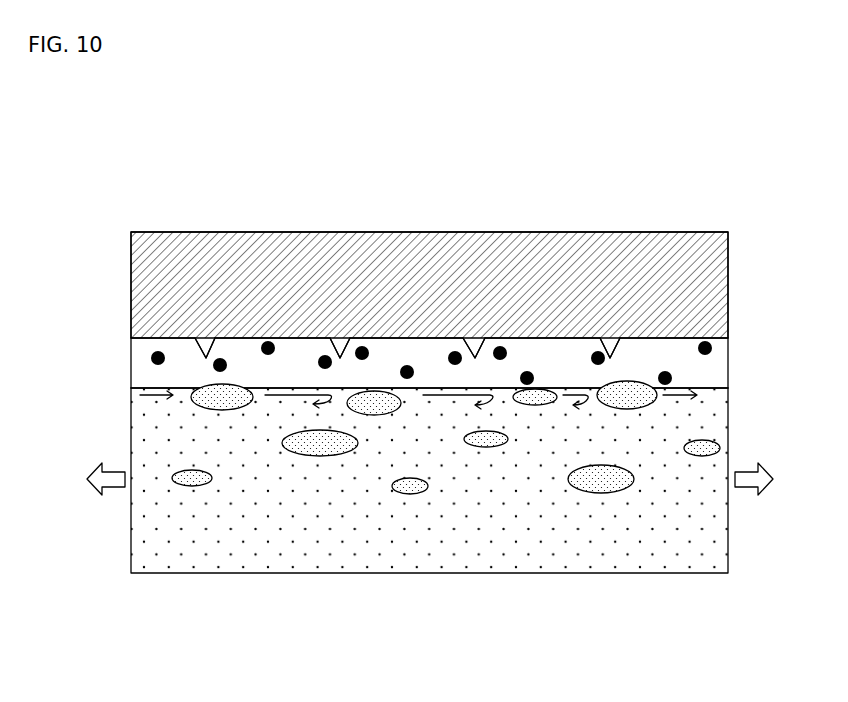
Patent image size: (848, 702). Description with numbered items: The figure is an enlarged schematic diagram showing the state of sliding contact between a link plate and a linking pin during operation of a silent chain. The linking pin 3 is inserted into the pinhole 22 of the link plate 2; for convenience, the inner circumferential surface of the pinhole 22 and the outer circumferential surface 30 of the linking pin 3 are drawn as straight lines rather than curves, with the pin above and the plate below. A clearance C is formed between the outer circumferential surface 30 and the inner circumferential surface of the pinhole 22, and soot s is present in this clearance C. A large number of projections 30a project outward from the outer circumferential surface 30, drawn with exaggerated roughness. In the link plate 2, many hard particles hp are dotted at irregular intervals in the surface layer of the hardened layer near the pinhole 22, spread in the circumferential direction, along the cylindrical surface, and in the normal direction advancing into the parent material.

The link plate 2 is at (476, 573).
The linking pin 3 is at (440, 232).
The outer circumferential surface 30 is at (131, 349).
The projection 30a is at (614, 353).
The soot s is at (152, 360).
The clearance C is at (563, 371).
The pinhole 22 is at (725, 385).
The hard particle hp is at (222, 410).